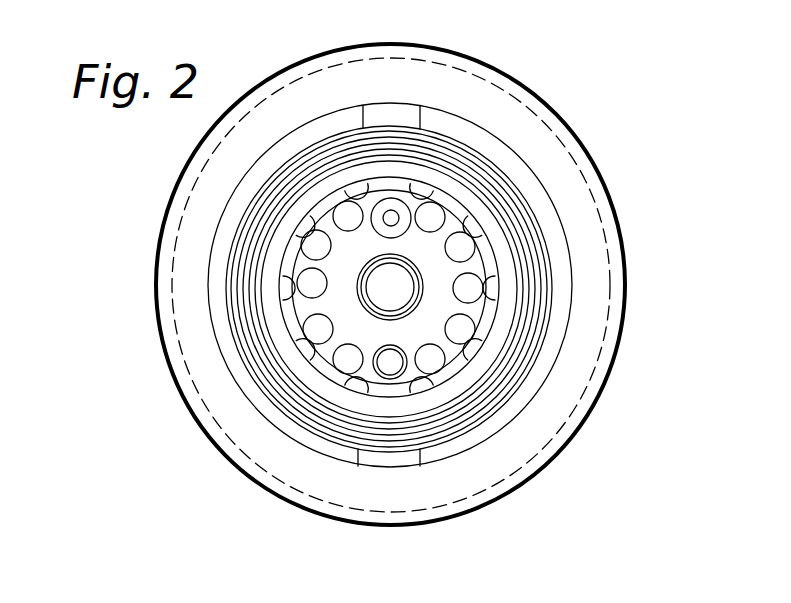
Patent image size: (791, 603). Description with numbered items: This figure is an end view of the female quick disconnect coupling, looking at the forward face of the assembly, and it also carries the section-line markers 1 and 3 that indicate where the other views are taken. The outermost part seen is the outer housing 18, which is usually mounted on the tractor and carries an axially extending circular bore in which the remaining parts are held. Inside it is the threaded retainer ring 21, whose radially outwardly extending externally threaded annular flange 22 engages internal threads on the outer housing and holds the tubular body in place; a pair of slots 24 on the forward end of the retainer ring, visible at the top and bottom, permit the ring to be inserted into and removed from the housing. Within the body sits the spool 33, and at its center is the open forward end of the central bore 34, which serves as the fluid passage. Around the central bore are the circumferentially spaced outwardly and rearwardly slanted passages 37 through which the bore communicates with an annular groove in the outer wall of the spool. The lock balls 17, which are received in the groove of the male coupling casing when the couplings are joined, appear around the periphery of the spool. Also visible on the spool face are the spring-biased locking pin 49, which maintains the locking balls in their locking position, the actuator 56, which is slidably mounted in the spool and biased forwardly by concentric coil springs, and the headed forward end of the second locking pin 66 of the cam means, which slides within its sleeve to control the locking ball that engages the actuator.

The lock balls 17 is at (425, 390).
The outer housing 18 is at (614, 350).
The threaded retainer ring 21 is at (563, 297).
The externally threaded annular flange 22 is at (206, 360).
The slots 24 is at (410, 108).
The spool 33 is at (271, 306).
The central bore 34 is at (297, 285).
The slanted passages 37 is at (473, 279).
The locking pin 49 is at (388, 216).
The actuator 56 is at (391, 289).
The second locking pin 66 is at (391, 366).
The section line 1- 1 is at (391, 3).
The section line 3- 3 is at (552, 53).